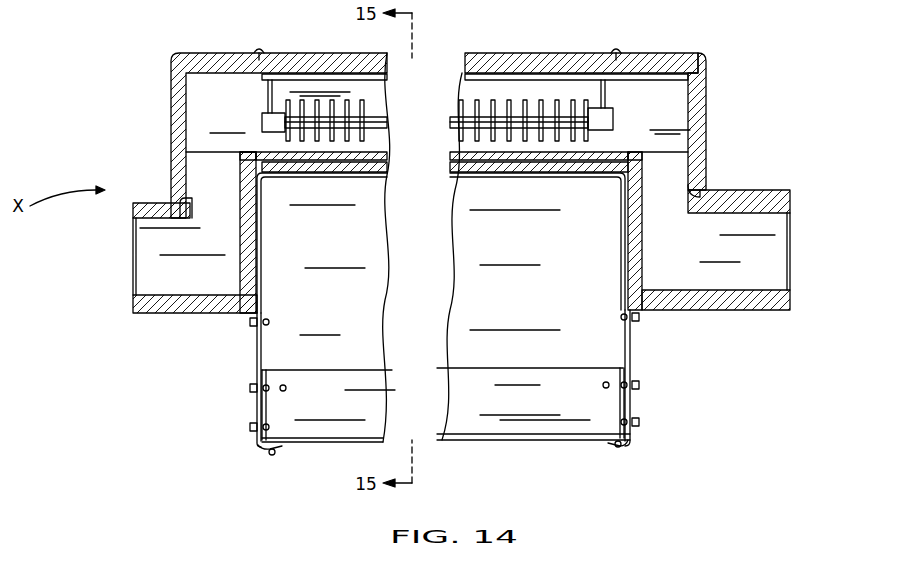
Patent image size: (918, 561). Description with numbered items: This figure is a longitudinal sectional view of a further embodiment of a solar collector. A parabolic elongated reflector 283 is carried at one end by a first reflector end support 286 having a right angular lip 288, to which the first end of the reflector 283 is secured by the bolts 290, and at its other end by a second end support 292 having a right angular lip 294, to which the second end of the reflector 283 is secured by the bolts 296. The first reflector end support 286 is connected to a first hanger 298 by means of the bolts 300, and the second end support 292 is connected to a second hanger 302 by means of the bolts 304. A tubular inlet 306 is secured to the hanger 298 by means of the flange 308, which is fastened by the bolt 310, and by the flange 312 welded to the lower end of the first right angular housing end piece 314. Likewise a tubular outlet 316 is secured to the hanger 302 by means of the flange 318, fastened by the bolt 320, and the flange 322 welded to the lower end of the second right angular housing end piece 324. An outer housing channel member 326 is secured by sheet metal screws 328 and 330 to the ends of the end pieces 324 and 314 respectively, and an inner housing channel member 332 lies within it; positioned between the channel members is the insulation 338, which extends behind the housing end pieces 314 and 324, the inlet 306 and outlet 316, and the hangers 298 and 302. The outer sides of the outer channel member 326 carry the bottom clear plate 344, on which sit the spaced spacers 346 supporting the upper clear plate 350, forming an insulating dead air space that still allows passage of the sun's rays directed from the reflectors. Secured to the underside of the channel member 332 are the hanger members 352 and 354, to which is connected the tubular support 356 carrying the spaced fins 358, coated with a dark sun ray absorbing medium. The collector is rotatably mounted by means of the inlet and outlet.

The parabolic elongated reflector 283 is at (343, 390).
The first reflector end support 286 is at (268, 410).
The right angular lip 288 is at (282, 446).
The bolts 290 is at (287, 388).
The second end support 292 is at (615, 410).
The right angular lip 294 is at (610, 445).
The bolts 296 is at (605, 384).
The first hanger 298 is at (259, 247).
The bolts 300 is at (252, 427).
The second hanger 302 is at (624, 253).
The bolts 304 is at (642, 422).
The tubular inlet 306 is at (152, 203).
The flange 308 is at (252, 325).
The bolt 310 is at (262, 322).
The flange 312 is at (188, 202).
The first right angular housing end piece 314 is at (213, 52).
The tubular outlet 316 is at (746, 190).
The flange 318 is at (640, 322).
The bolt 320 is at (630, 318).
The flange 322 is at (693, 188).
The second right angular housing end piece 324 is at (707, 94).
The outer housing channel member 326 is at (297, 74).
The sheet metal screw 328 is at (616, 51).
The sheet metal screw 330 is at (262, 50).
The inner housing channel member 332 is at (388, 90).
The insulation 338 is at (504, 62).
The bottom clear plate 344 is at (391, 165).
The spacers 346 is at (246, 154).
The upper clear plate 350 is at (390, 154).
The hanger member 352 is at (268, 94).
The hanger member 354 is at (606, 88).
The tubular support 356 is at (553, 130).
The fins 358 is at (511, 137).